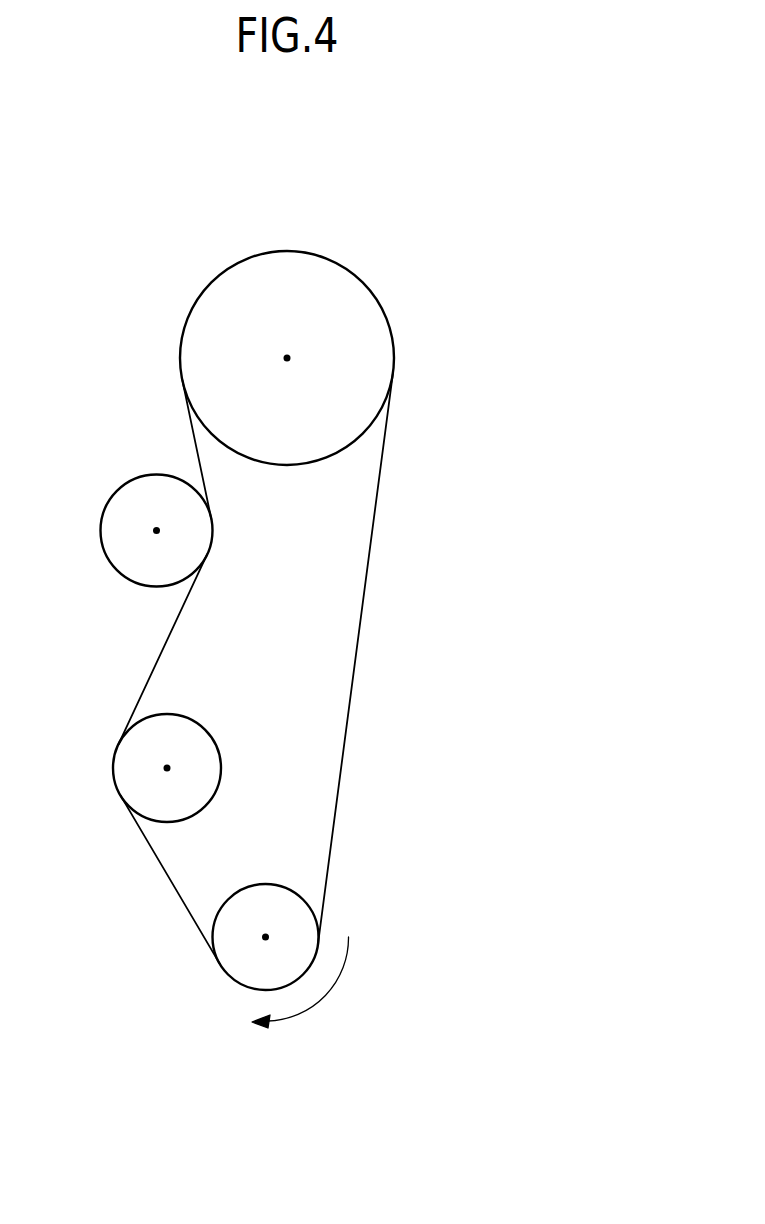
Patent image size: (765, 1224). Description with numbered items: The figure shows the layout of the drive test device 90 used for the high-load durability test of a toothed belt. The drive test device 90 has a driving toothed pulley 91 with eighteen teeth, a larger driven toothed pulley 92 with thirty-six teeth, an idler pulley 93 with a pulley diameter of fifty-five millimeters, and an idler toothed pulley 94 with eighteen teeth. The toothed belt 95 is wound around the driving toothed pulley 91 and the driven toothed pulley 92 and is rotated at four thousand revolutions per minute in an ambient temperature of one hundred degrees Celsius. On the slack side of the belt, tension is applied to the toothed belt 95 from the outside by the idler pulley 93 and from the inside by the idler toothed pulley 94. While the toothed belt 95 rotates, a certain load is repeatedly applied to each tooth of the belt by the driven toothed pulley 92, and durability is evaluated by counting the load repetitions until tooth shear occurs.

The drive test device 90 is at (410, 247).
The driving toothed pulley 91 is at (297, 937).
The driven toothed pulley 92 is at (250, 287).
The idler pulley 93 is at (125, 543).
The idler toothed pulley 94 is at (140, 779).
The toothed belt 95 is at (380, 560).